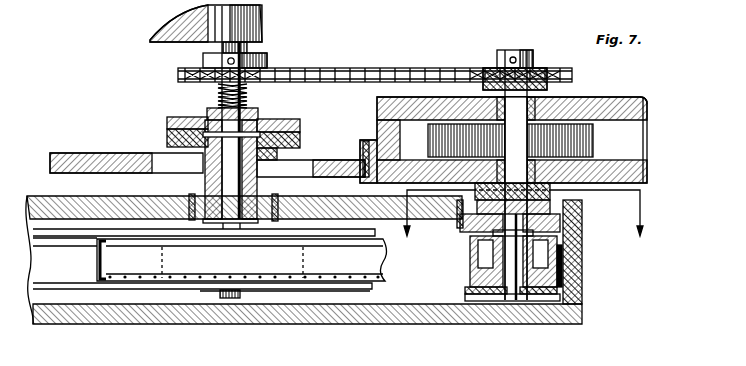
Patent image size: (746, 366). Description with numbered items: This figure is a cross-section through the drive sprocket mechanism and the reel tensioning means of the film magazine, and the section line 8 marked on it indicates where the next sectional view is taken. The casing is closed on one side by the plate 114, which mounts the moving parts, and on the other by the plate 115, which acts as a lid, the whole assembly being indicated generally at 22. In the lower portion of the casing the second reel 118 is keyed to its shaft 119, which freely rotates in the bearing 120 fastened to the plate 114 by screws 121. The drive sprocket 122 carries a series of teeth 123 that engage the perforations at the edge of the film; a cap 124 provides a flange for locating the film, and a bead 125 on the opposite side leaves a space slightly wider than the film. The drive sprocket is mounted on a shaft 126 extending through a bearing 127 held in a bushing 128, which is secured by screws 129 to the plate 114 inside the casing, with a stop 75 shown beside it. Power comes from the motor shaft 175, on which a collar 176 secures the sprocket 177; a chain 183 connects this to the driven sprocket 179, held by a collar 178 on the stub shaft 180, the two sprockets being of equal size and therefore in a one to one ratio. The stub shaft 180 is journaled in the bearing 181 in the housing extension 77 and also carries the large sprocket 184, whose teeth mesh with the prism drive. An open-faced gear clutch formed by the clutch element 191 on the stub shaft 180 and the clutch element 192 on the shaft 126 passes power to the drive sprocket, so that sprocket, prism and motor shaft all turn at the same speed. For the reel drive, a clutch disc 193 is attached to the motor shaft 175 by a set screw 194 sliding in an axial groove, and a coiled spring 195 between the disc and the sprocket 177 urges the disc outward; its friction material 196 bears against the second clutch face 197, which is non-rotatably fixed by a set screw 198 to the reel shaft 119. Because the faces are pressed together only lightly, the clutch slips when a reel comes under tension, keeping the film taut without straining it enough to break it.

The section line 8- 8 is at (527, 219).
The base housing 22 is at (586, 320).
The stop bar 75 is at (580, 258).
The housing extension 77 is at (648, 106).
The plate 114 is at (37, 194).
The plate 115 is at (379, 325).
The second reel 118 is at (318, 293).
The shaft 119 is at (230, 300).
The bearing 120 is at (213, 219).
The screws 121 is at (191, 196).
The drive sprocket 122 is at (583, 277).
The teeth 123 is at (470, 278).
The cap 124 is at (477, 294).
The bead 125 is at (567, 240).
The shaft 126 is at (512, 300).
The bearing 127 is at (565, 224).
The bushing 128 is at (582, 207).
The screws 129 is at (462, 228).
The motor shaft 175 is at (232, 46).
The collar 176 is at (300, 38).
The sprocket 177 is at (178, 76).
The collar 178 is at (498, 58).
The driven sprocket 179 is at (541, 74).
The stub shaft 180 is at (516, 50).
The bearing 181 is at (568, 100).
The chain 183 is at (420, 70).
The large sprocket 184 is at (605, 136).
The clutch element 191 is at (530, 180).
The clutch element 192 is at (645, 171).
The clutch disc 193 is at (167, 121).
The set screw 194 is at (250, 113).
The coiled spring 195 is at (217, 98).
The friction material 196 is at (168, 138).
The second clutch face 197 is at (297, 147).
The set screw 198 is at (262, 156).